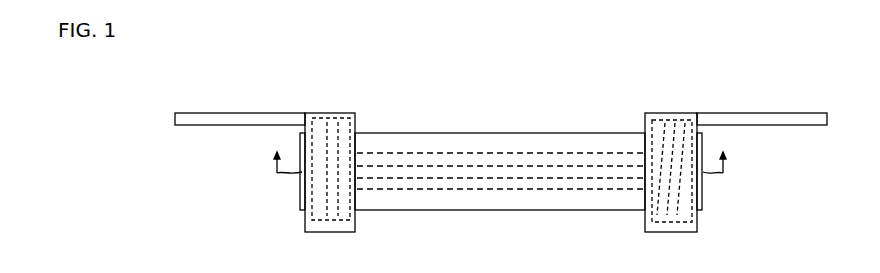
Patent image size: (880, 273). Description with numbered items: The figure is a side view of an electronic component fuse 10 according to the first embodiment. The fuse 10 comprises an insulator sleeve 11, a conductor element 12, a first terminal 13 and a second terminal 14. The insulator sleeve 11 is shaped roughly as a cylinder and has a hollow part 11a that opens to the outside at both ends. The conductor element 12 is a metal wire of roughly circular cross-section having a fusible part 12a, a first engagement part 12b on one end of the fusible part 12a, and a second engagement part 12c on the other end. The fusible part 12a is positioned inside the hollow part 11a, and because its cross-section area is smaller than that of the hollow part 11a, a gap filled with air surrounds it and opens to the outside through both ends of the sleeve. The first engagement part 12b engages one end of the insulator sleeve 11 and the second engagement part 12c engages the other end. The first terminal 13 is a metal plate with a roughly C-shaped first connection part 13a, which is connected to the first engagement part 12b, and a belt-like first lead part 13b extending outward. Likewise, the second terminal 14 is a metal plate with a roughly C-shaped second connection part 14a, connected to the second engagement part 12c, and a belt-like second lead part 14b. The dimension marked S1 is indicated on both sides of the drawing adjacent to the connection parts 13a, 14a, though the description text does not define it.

The fuse 10 is at (215, 112).
The insulator sleeve 11 is at (422, 140).
The hollow part 11a is at (468, 156).
The conductor element 12 is at (571, 165).
The fusible part 12a is at (500, 171).
The first engagement part 12b is at (312, 118).
The second engagement part 12c is at (678, 122).
The first terminal 13 is at (348, 112).
The first connection part 13a is at (302, 205).
The first lead part 13b is at (246, 118).
The second terminal 14 is at (658, 113).
The second connection part 14a is at (700, 205).
The second lead part 14b is at (757, 116).
The gap / spacing S1 is at (498, 167).